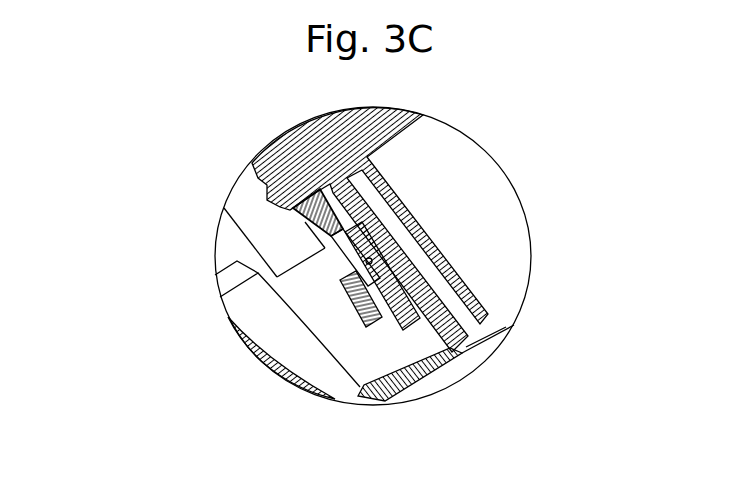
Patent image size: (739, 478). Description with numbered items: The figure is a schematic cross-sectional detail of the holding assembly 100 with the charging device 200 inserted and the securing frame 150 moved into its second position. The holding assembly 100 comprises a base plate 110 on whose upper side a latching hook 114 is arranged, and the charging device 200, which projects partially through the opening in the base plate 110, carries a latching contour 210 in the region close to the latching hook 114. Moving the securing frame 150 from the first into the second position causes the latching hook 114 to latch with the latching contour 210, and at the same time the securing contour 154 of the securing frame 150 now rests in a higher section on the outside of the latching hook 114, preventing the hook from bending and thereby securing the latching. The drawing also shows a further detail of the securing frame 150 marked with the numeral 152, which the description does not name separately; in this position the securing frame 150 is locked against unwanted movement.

The holding assembly 100 is at (190, 131).
The base plate 110 is at (403, 375).
The latching hook 114 is at (345, 254).
The securing frame 150 is at (358, 302).
The retaining member 152 is at (335, 228).
The securing contour 154 is at (372, 295).
The charging device 200 is at (388, 183).
The latching contour 210 is at (375, 259).